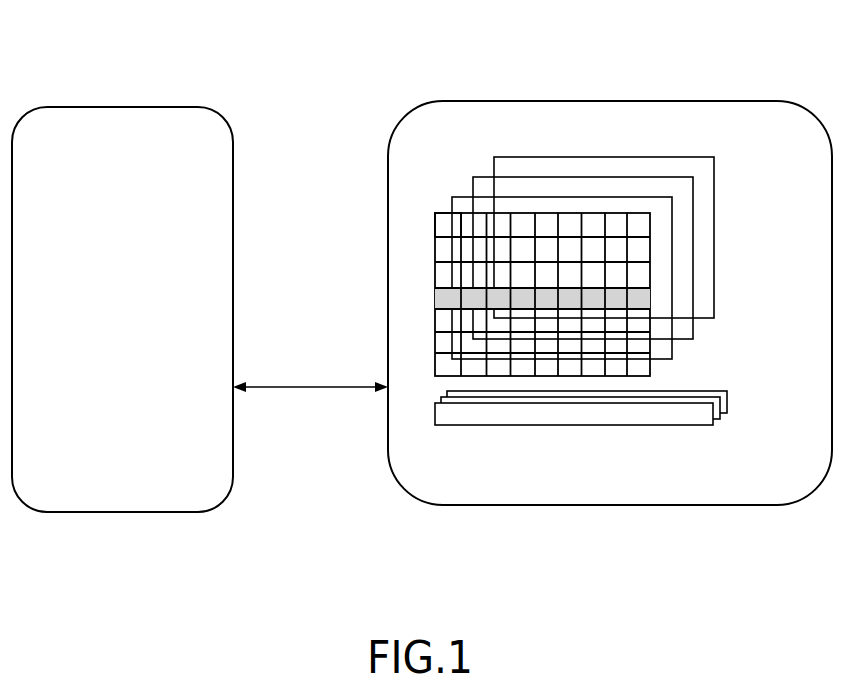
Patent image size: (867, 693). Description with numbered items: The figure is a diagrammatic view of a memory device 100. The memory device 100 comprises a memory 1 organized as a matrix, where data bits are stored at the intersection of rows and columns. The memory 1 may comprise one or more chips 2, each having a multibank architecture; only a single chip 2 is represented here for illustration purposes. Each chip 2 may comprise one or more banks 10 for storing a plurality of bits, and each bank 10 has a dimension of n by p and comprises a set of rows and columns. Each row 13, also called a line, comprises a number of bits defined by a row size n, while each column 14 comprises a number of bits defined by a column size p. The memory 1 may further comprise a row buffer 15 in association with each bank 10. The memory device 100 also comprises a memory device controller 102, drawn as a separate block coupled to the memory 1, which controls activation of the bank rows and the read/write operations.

The memory device 100 is at (363, 42).
The memory device controller 102 is at (100, 107).
The memory 1 is at (650, 101).
The bank 10 is at (706, 170).
The chip 2 is at (580, 143).
The row 13 is at (416, 299).
The column 14 is at (448, 220).
The row buffer 15 is at (418, 433).